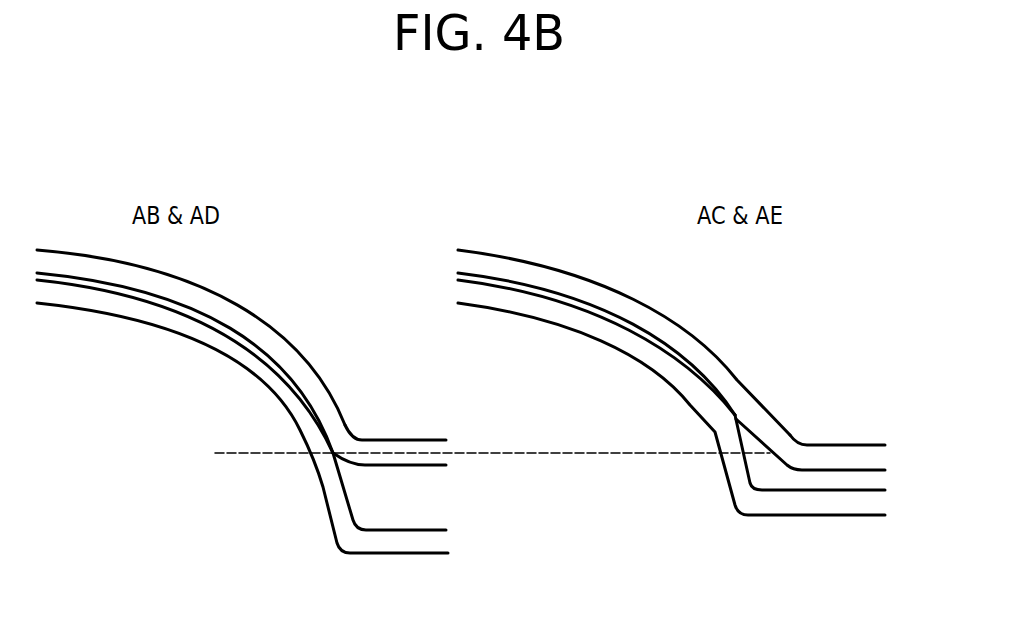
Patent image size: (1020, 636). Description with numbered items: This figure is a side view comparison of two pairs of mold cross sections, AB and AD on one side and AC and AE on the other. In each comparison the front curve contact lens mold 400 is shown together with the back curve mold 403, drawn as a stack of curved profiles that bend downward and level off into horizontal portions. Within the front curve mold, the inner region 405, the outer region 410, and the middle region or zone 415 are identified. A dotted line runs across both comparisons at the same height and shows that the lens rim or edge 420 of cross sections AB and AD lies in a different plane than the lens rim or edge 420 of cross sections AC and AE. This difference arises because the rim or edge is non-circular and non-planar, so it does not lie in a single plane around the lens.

The front curve contact lens mold 400 is at (222, 322).
The back curve mold 403 is at (180, 325).
The inner region 405 is at (283, 370).
The outer region 410 is at (413, 466).
The middle region or zone 415 is at (349, 457).
The lens rim or edge 420 is at (336, 452).